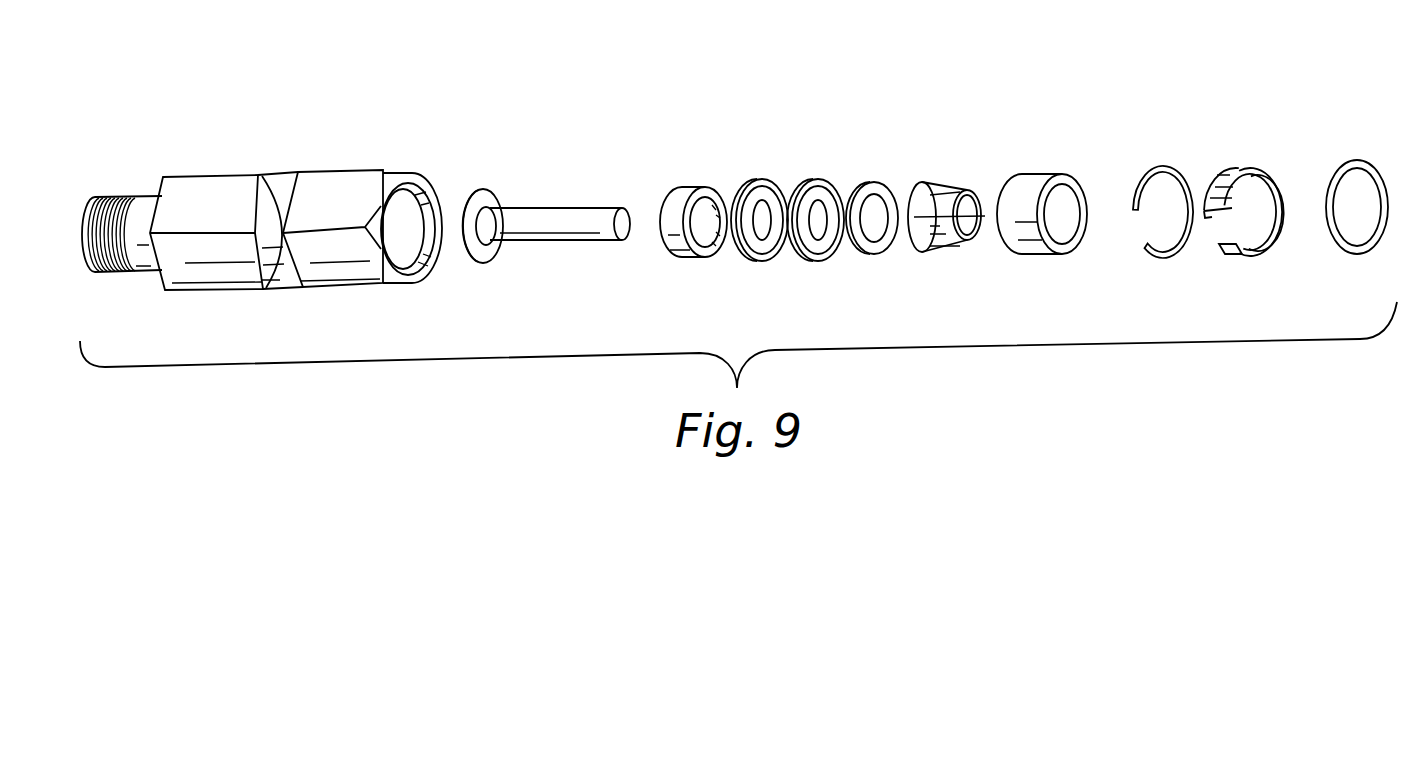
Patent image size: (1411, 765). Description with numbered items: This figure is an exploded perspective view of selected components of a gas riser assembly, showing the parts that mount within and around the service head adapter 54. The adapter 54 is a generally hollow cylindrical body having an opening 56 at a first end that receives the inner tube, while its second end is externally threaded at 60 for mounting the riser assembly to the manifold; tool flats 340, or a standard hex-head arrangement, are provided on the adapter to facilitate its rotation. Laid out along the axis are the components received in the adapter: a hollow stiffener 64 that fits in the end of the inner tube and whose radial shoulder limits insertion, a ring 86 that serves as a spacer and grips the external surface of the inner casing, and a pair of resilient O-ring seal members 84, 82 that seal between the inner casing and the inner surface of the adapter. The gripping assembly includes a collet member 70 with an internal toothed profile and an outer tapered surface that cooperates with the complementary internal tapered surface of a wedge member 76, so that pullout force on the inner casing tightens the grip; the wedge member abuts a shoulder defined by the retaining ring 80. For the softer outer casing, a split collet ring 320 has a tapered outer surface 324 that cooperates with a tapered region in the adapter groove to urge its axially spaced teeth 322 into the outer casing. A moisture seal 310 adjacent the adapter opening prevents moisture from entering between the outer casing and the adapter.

The external threads 60 is at (121, 197).
The tool flats 340 is at (220, 195).
The adapter 54 is at (273, 218).
The opening 56 is at (420, 212).
The hollow stiffener 64 is at (567, 212).
The ring 86 is at (690, 187).
The seal member 84 is at (760, 187).
The seal member 82 is at (830, 187).
The collet member 70 is at (950, 187).
The wedge member 76 is at (1043, 180).
The retaining ring 80 is at (1163, 167).
The collet ring 320 is at (1262, 183).
The outer surface 324 is at (1243, 167).
The teeth 322 is at (1273, 243).
The moisture seal 310 is at (1357, 160).